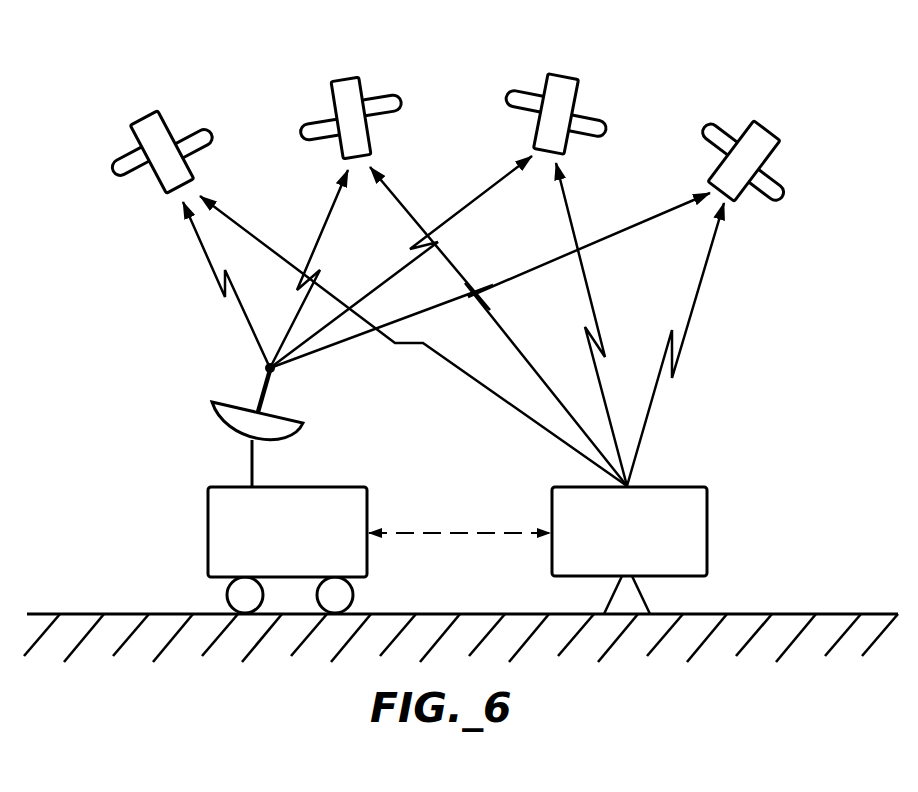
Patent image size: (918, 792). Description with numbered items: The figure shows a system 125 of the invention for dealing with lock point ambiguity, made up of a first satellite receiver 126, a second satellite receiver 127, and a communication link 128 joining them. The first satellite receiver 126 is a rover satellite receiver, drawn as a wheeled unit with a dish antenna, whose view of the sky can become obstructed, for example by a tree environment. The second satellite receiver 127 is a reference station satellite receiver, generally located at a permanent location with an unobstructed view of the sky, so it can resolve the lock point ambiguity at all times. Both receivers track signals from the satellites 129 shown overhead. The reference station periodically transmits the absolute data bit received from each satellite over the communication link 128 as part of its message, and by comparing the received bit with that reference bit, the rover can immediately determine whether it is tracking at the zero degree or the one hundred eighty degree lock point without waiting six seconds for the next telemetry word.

The system 125 is at (168, 522).
The first satellite receiver SR1 126 is at (367, 515).
The second satellite receiver SR2 127 is at (708, 525).
The communication link 128 is at (428, 533).
The satellite vehicles SV1-SV4 129 is at (742, 132).